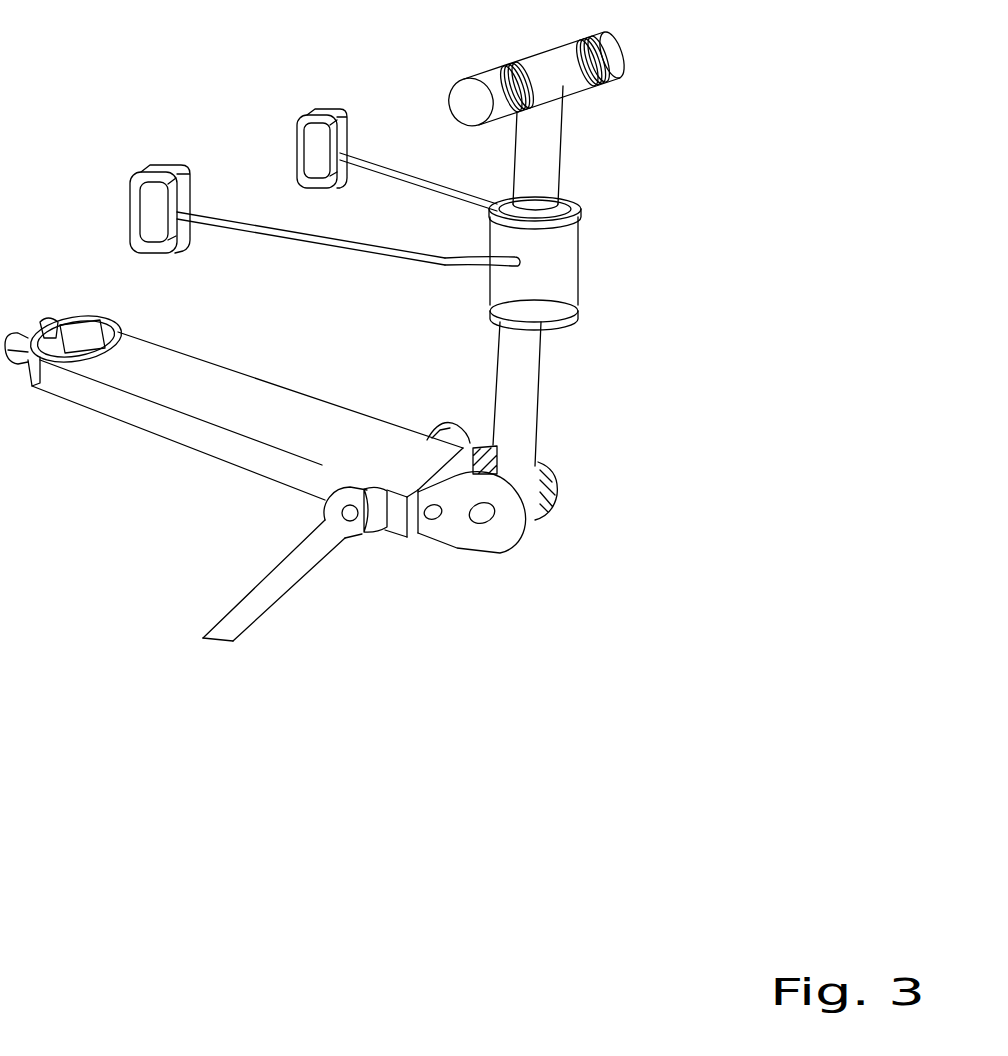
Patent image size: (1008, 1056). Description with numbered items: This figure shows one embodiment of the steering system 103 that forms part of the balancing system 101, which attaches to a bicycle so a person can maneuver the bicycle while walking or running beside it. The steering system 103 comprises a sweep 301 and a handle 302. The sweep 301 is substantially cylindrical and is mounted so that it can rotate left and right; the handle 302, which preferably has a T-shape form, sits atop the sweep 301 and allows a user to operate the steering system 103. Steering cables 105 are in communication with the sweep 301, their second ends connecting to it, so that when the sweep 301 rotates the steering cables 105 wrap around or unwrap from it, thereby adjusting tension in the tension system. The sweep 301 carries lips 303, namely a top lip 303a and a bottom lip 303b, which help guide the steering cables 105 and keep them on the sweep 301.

The balancing system 101 is at (409, 93).
The steering system 103 is at (637, 475).
The steering cable 105 is at (220, 213).
The sweep 301 is at (546, 283).
The handle 302 is at (572, 65).
The lip 303 is at (503, 218).
The top lip 303a is at (546, 226).
The bottom lip 303b is at (545, 317).